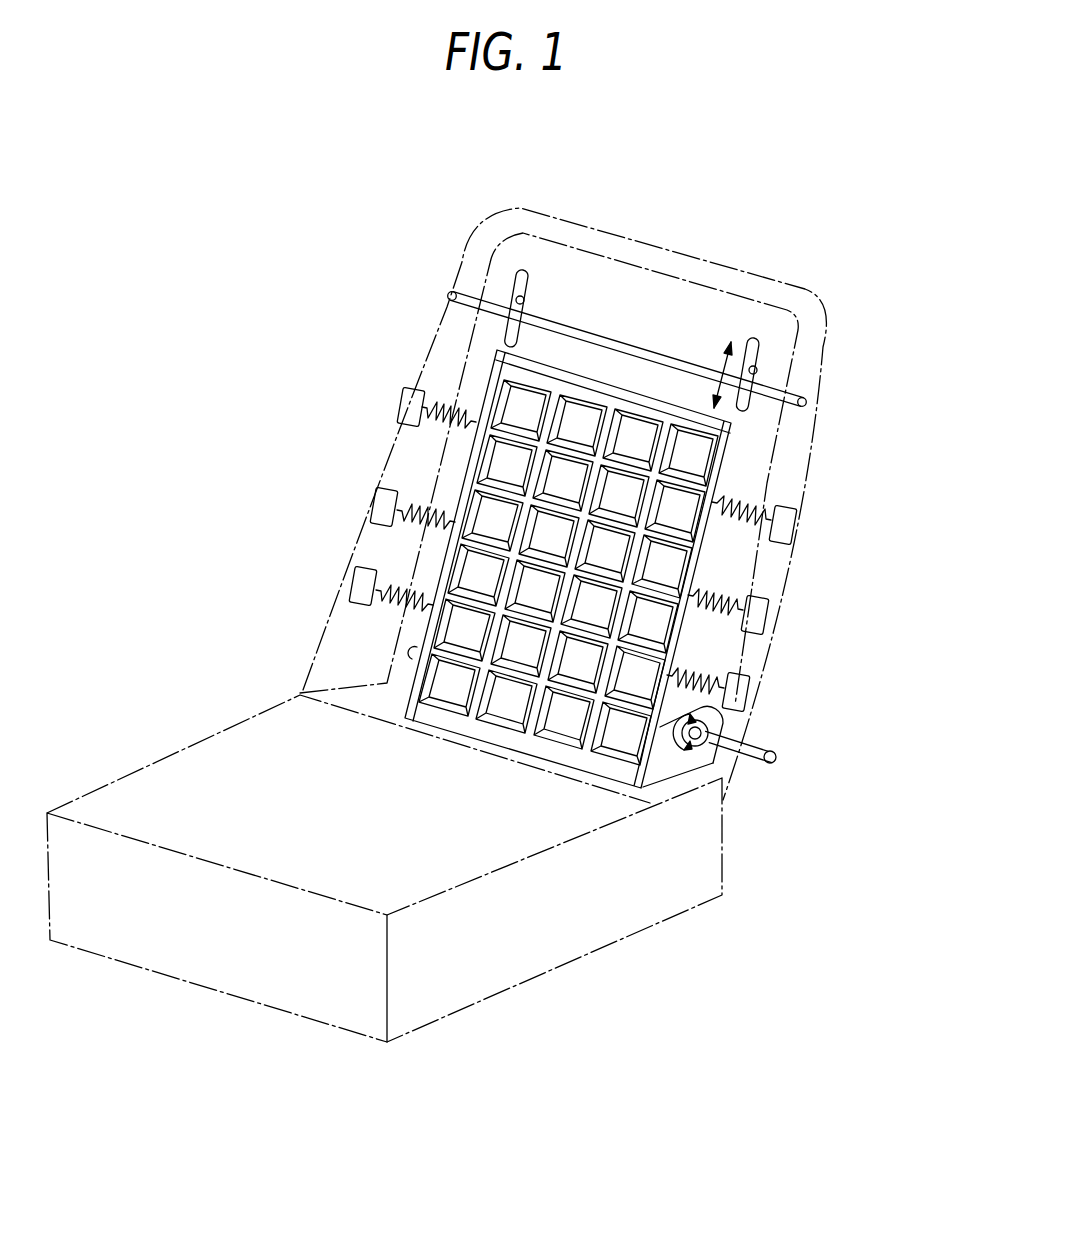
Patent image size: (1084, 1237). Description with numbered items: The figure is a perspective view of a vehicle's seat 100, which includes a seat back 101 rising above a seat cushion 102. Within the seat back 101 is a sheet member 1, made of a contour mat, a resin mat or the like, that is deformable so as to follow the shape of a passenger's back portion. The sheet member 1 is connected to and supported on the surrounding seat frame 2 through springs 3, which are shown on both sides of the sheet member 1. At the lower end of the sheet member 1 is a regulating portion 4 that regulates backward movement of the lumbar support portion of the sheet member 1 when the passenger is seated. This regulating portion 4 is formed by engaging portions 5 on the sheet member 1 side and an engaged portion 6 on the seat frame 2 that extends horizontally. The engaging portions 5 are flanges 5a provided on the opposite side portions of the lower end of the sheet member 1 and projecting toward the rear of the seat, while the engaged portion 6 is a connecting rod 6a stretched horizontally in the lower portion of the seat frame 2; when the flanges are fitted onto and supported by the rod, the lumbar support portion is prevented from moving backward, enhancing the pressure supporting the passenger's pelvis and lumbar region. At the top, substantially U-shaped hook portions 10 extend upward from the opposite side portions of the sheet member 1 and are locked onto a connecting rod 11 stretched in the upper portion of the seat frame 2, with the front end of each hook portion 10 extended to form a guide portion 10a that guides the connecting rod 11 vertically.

The sheet member 1 is at (487, 743).
The seat frame 2 is at (380, 448).
The spring 3 is at (447, 397).
The regulating portion 4 is at (716, 772).
The engaging portions 5 is at (650, 792).
The flanges 5a is at (678, 760).
The engaged portion 6 is at (775, 736).
The connecting rod (lower rod) 6a is at (778, 759).
The hook portions 10 is at (530, 282).
The guide portion 10a is at (524, 300).
The upper rod (connecting rod) 11 is at (792, 393).
The vehicle's seat 100 is at (728, 212).
The seat back 101 is at (856, 490).
The seat cushion 102 is at (610, 974).